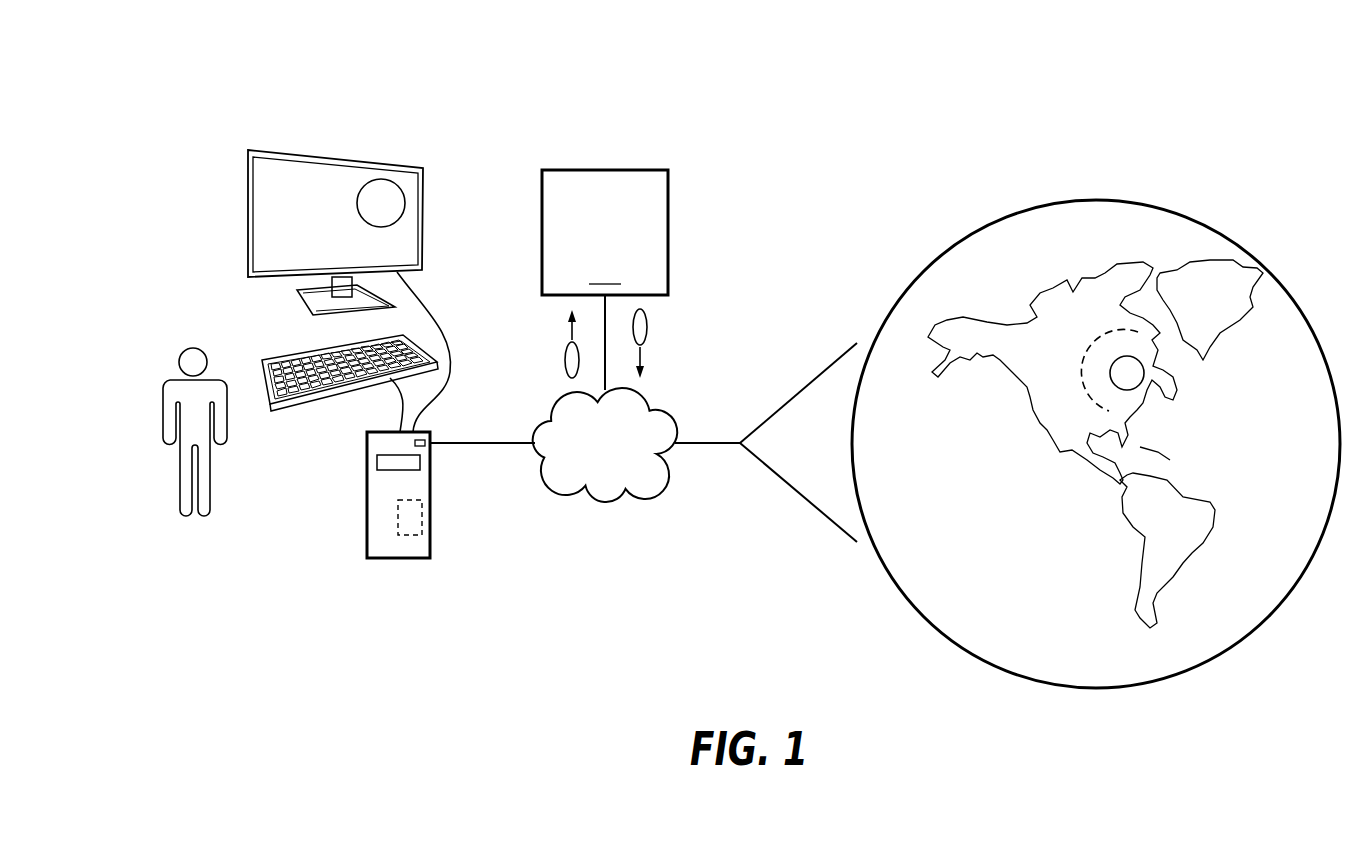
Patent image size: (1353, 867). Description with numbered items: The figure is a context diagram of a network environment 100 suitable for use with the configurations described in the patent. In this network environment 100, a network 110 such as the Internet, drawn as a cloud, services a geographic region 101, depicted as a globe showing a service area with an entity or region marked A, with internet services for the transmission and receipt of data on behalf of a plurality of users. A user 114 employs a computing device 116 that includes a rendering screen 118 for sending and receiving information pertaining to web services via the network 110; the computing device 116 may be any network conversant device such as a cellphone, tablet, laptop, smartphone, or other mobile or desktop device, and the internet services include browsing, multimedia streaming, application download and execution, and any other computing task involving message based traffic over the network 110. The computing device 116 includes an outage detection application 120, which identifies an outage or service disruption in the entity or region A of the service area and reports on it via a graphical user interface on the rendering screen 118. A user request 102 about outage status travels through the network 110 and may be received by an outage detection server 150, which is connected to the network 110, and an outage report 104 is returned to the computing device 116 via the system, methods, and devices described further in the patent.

The network environment 100 is at (1094, 136).
The geographic region 101 is at (995, 607).
The user request 102 is at (563, 360).
The outage report 104 is at (648, 325).
The network 110 is at (587, 462).
The user 114 is at (165, 387).
The computing device 116 is at (367, 497).
The rendering screen 118 is at (248, 218).
The outage detection application 120 is at (415, 520).
The outage detection server 150 is at (605, 232).